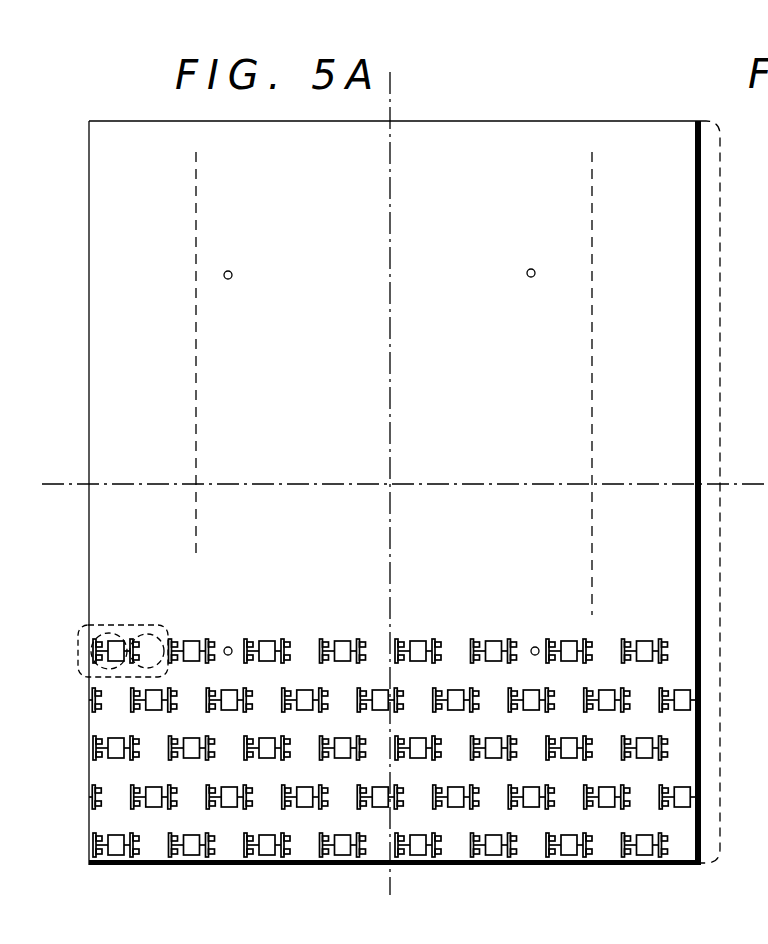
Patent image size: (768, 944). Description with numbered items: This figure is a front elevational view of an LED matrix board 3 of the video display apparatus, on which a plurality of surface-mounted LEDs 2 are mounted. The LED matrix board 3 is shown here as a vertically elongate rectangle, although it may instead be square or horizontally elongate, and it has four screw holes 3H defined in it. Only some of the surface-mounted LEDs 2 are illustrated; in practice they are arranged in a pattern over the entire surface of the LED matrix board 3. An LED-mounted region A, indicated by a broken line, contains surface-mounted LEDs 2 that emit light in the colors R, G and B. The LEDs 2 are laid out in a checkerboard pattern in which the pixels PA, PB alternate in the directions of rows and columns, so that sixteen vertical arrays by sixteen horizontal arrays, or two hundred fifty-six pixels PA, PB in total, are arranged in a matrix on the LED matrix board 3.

The LED matrix board 3 is at (476, 128).
The surface-mounted LEDs 2 is at (721, 451).
The screw holes 3H is at (232, 279).
The LED-mounted region A is at (122, 625).
The pixel PA is at (91, 646).
The pixel PB is at (148, 627).